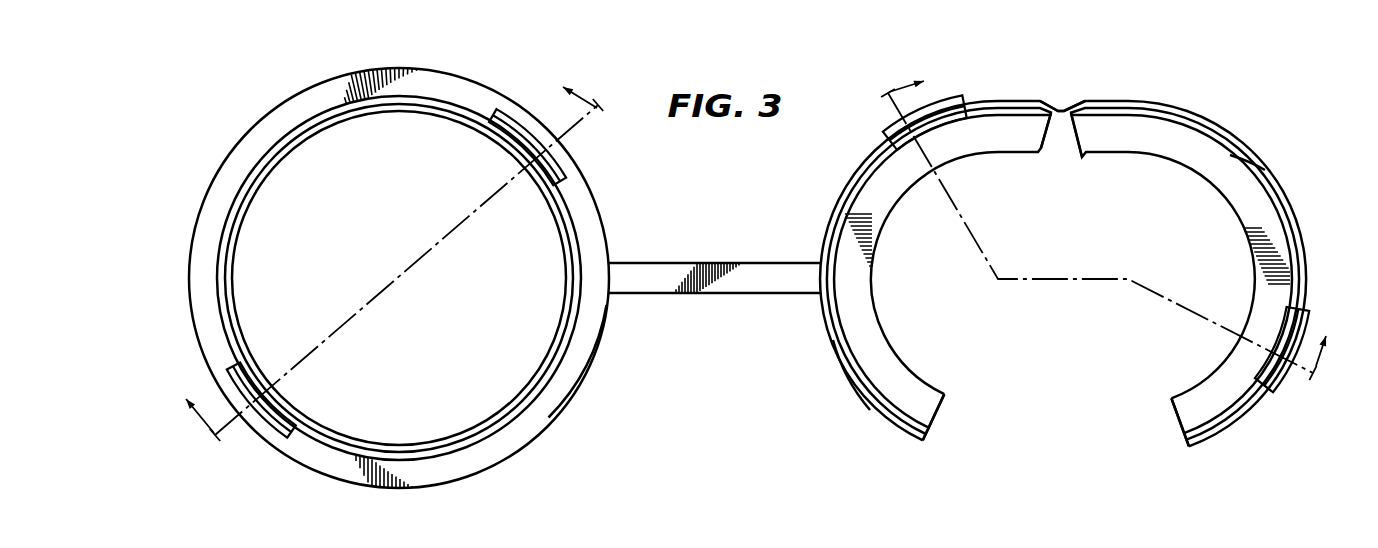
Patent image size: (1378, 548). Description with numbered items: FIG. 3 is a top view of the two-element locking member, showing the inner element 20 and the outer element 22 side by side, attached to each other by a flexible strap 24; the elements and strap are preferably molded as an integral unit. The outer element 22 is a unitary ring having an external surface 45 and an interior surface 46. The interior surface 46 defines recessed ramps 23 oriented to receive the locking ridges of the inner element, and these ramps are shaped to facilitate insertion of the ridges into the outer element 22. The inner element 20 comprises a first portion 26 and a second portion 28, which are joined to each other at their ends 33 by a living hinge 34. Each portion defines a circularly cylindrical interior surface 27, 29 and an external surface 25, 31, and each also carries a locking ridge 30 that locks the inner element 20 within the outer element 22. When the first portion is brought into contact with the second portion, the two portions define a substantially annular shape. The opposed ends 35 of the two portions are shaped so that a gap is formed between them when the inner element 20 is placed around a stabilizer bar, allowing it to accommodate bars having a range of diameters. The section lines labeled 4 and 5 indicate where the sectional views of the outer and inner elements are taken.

The inner element 20 is at (1213, 123).
The outer element 22 is at (452, 72).
The recessed ramp 23 is at (290, 436).
The flexible strap 24 is at (700, 262).
The external surface 25 is at (1266, 168).
The first portion 26 is at (1297, 214).
The interior surface 27 is at (1250, 256).
The second portion 28 is at (832, 352).
The interior surface 29 is at (880, 248).
The locking ridge 30 is at (1268, 392).
The external surface 31 is at (822, 231).
The end 33 is at (1079, 158).
The living hinge 34 is at (1062, 110).
The opposed end 35 is at (1174, 418).
The external surface 45 is at (584, 384).
The interior surface 46 is at (238, 232).
The section line 4- 4 is at (385, 255).
The section line 5- 5 is at (1112, 222).